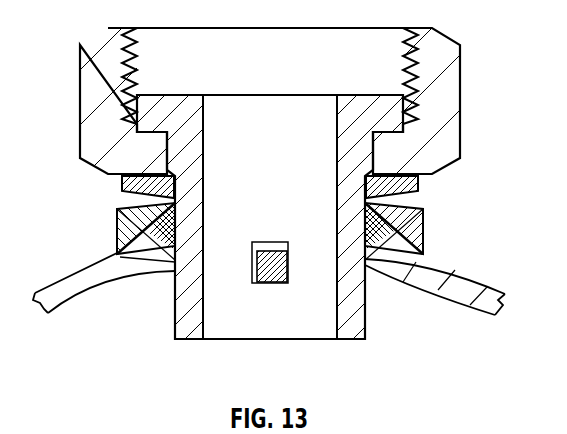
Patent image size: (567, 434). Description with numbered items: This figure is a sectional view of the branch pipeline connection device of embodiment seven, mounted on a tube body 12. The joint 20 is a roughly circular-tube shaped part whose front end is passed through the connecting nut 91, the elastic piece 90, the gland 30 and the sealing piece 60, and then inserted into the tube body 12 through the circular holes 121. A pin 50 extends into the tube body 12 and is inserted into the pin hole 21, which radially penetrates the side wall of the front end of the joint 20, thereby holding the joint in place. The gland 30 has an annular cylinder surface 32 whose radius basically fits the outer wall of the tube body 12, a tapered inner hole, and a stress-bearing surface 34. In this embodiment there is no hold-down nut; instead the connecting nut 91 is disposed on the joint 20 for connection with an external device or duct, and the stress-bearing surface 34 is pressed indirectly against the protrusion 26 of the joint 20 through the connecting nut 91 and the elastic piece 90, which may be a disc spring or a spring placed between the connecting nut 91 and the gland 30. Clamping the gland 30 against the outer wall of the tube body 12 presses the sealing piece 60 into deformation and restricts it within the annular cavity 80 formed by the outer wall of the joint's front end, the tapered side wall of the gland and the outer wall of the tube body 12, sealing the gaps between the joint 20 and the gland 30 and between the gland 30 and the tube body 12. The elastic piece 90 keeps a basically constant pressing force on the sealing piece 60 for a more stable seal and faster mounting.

The tube body 12 is at (97, 282).
The joint 20 is at (190, 246).
The pin hole 21 is at (273, 245).
The protrusion 26 is at (405, 117).
The gland 30 is at (140, 229).
The annular cylinder surface 32 is at (134, 258).
The stress-bearing surface 34 is at (420, 186).
The pin 50 is at (270, 284).
The sealing piece 60 is at (392, 226).
The annular cavity 80 is at (156, 245).
The elastic piece 90 is at (120, 183).
The connecting nut 91 is at (102, 97).
The circular holes 121 is at (365, 263).